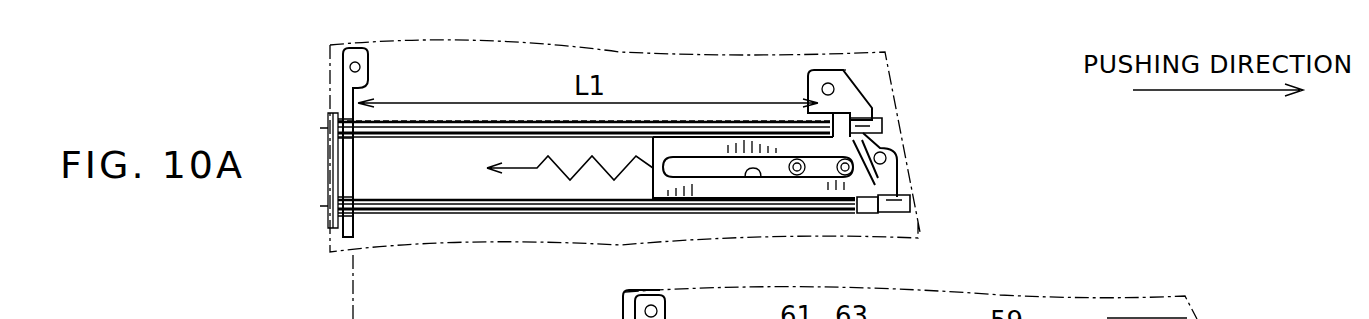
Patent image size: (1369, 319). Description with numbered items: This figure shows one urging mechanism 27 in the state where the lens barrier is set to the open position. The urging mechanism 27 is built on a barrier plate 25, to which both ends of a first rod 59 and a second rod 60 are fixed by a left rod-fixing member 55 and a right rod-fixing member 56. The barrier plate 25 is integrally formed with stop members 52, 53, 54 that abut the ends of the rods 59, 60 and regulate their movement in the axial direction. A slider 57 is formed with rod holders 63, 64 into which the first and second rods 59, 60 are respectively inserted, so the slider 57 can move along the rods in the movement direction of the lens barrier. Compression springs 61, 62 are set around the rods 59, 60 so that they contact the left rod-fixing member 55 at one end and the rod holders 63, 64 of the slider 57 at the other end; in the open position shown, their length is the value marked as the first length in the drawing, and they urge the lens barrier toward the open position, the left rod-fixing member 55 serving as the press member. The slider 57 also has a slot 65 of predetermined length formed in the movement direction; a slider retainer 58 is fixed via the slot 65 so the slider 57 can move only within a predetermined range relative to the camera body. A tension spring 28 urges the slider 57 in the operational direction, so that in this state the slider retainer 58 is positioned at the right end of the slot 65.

The barrier plate 25 is at (910, 148).
The urging mechanism 27 is at (590, 220).
The tension spring 28 is at (518, 164).
The stop member 52 is at (330, 128).
The stop member 53 is at (882, 123).
The stop member 54 is at (911, 204).
The left rod-fixing member 55 is at (368, 75).
The right rod-fixing member 56 is at (808, 100).
The slider 57 is at (705, 188).
The slider retainer 58 is at (823, 178).
The first rod 59 is at (474, 127).
The second rod 60 is at (453, 208).
The compression spring 61 is at (520, 121).
The compression spring 62 is at (534, 213).
The rod holder 63 is at (856, 70).
The rod holder 64 is at (866, 208).
The slot 65 is at (753, 178).